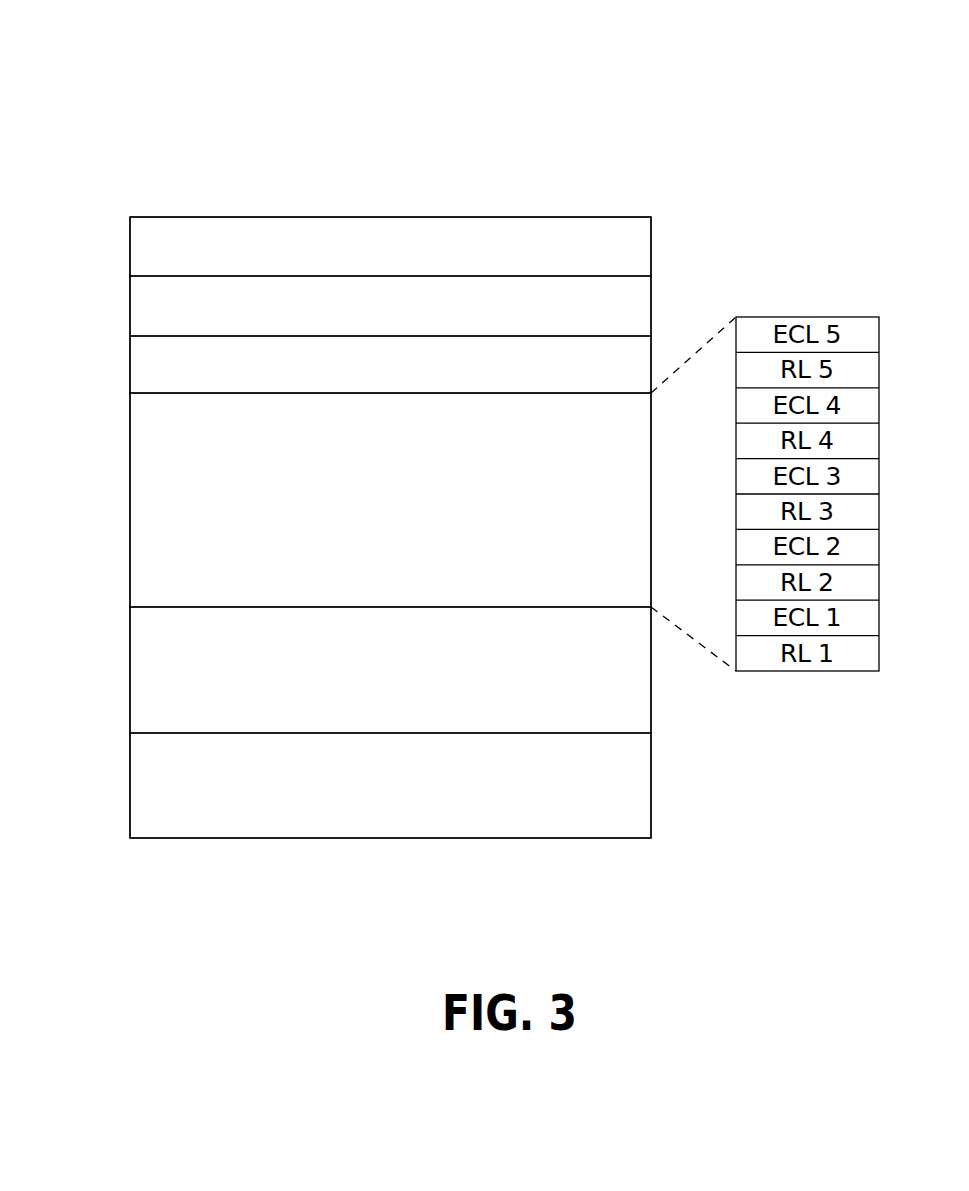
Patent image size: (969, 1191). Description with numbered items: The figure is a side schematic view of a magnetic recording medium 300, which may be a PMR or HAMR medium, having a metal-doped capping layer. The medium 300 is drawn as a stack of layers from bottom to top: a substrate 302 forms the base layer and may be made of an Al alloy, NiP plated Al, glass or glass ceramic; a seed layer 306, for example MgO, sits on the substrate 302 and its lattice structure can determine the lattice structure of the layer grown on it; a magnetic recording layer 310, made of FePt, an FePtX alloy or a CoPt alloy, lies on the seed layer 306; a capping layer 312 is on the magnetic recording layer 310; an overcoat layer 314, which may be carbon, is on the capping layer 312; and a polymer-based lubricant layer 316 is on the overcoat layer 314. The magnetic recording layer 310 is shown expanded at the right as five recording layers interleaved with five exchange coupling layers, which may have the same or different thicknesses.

The magnetic recording medium 300 is at (368, 425).
The substrate 302 is at (129, 783).
The seed layer 306 is at (129, 671).
The magnetic recording layer (MRL) 310 is at (129, 466).
The capping layer 312 is at (129, 367).
The overcoat layer 314 is at (129, 307).
The lubricant layer 316 is at (129, 248).